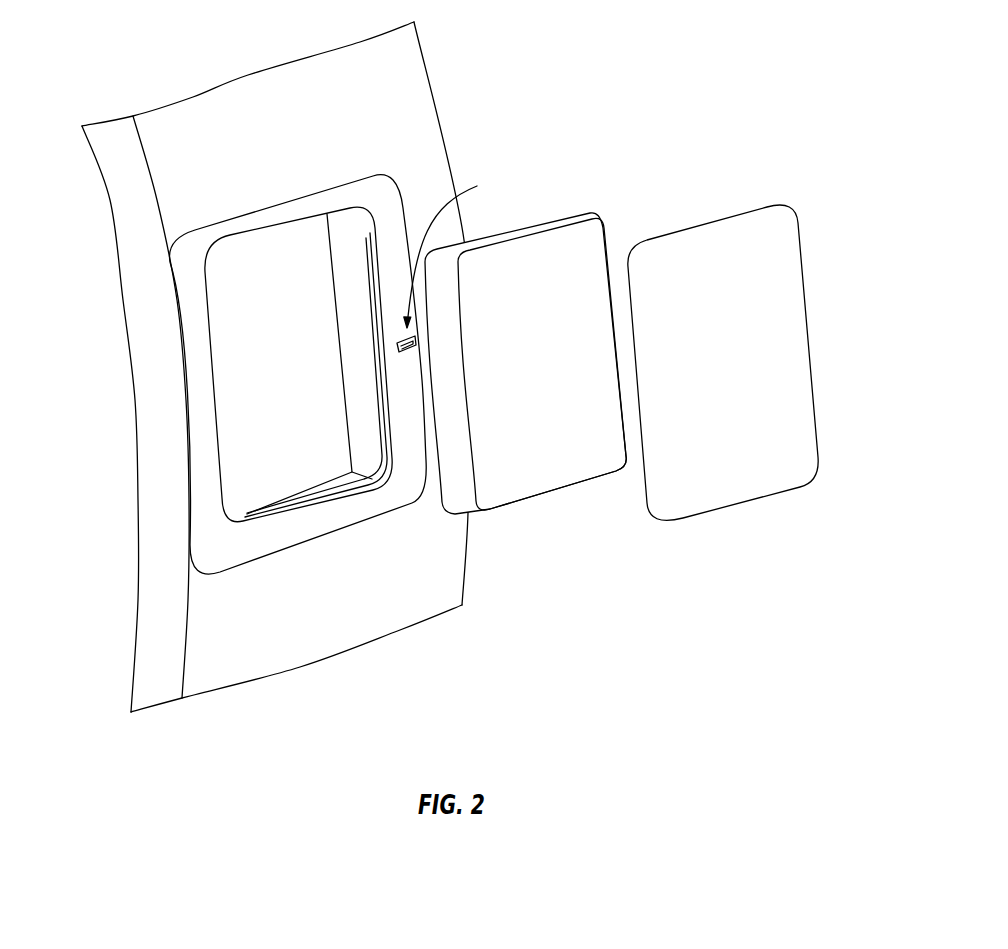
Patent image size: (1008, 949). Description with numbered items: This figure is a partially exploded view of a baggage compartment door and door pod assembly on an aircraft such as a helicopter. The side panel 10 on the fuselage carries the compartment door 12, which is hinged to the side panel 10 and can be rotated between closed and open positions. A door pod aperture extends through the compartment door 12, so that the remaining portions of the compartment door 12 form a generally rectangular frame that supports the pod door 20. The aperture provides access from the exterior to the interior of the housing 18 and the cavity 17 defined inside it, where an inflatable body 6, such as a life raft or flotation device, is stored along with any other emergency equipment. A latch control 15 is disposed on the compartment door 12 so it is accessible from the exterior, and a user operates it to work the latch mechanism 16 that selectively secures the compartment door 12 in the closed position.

The side panel 10 is at (418, 93).
The compartment door 12 is at (395, 218).
The housing 18 is at (238, 375).
The cavity 17 is at (266, 412).
The latch mechanism 16 is at (453, 250).
The latch control 15 is at (413, 340).
The inflatable body 6 is at (590, 231).
The pod door 20 is at (795, 337).